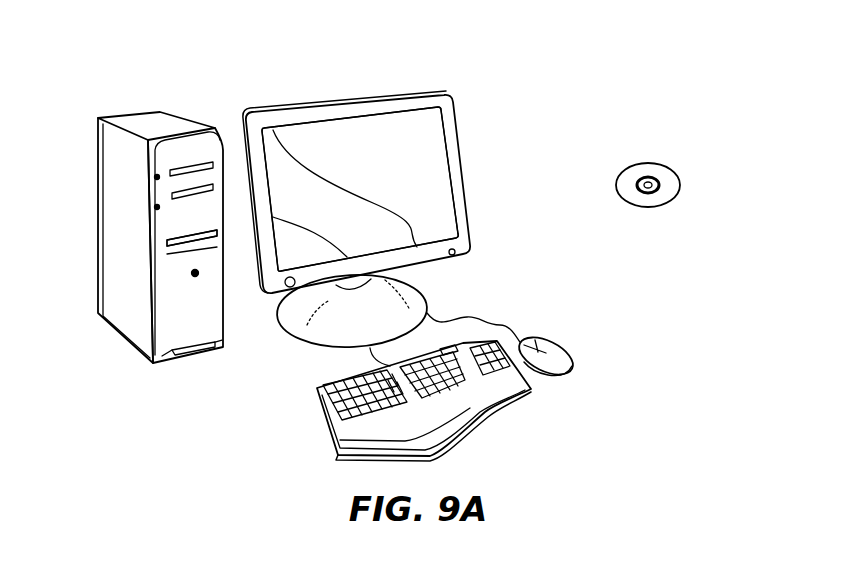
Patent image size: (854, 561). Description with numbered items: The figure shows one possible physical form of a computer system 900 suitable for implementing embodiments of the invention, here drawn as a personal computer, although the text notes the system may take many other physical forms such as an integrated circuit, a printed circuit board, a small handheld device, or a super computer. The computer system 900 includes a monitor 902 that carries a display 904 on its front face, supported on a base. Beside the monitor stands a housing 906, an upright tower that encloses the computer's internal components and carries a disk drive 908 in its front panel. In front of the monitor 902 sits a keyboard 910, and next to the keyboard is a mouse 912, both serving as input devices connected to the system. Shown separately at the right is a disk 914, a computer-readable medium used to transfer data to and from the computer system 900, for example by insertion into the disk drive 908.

The computer system 900 is at (580, 79).
The monitor 902 is at (467, 192).
The display 904 is at (422, 133).
The housing 906 is at (148, 122).
The disk drive 908 is at (212, 237).
The keyboard 910 is at (323, 422).
The mouse 912 is at (567, 350).
The disk 914 is at (667, 163).